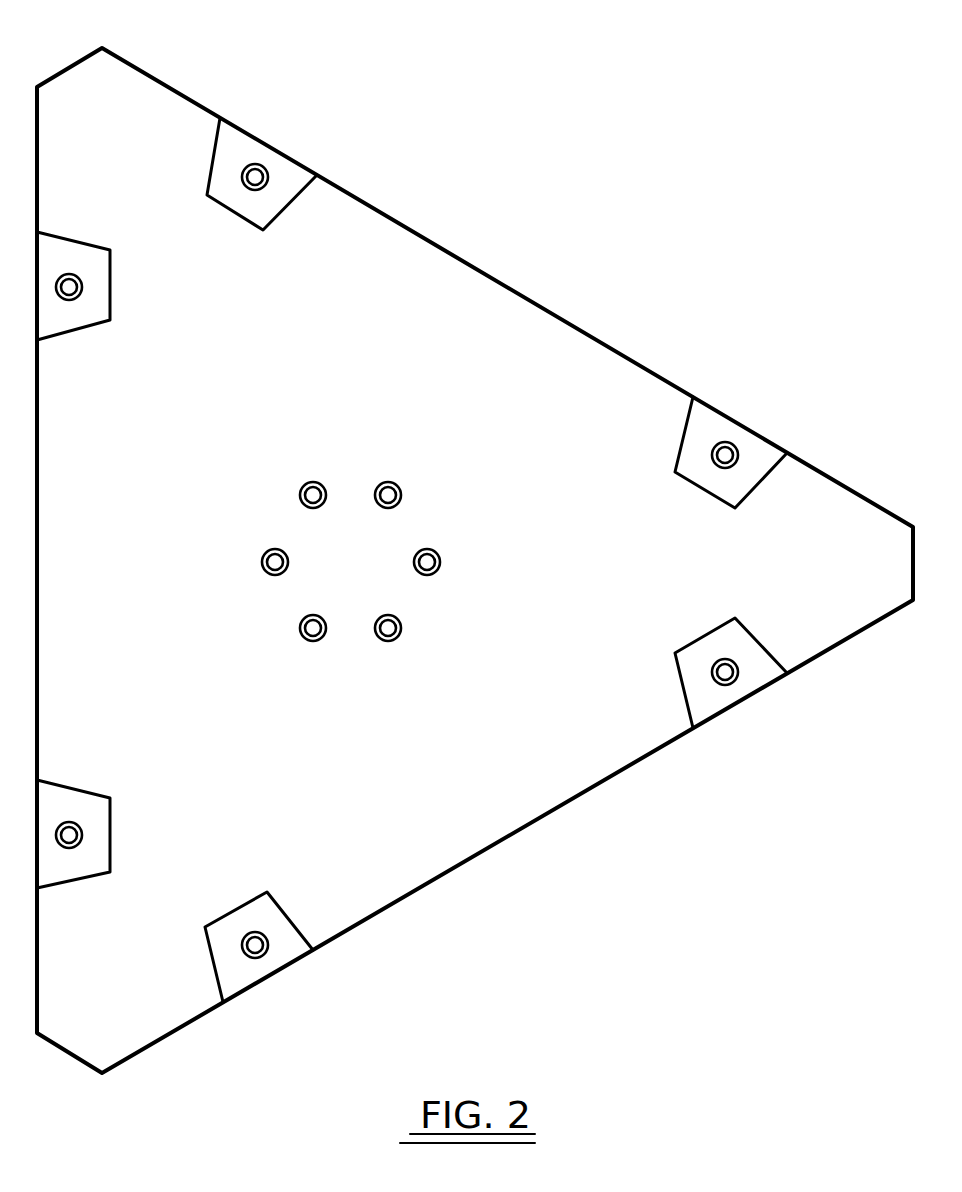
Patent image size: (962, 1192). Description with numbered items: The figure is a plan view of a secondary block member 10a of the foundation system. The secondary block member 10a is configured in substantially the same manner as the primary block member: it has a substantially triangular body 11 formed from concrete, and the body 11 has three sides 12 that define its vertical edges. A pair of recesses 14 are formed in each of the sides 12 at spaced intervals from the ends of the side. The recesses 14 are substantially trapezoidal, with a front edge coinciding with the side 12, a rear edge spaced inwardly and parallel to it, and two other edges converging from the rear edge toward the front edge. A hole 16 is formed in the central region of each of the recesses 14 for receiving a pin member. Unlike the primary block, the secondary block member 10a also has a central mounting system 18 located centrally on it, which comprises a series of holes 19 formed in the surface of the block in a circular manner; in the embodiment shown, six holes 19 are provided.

The secondary block member 10a is at (622, 157).
The triangular body 11 is at (590, 571).
The sides 12 is at (558, 313).
The recesses 14 is at (297, 180).
The hole 16 is at (262, 163).
The central mounting system 18 is at (368, 457).
The holes 19 is at (394, 484).